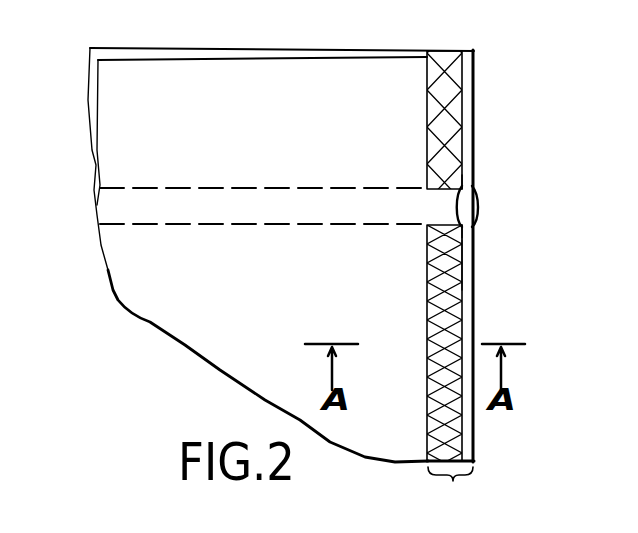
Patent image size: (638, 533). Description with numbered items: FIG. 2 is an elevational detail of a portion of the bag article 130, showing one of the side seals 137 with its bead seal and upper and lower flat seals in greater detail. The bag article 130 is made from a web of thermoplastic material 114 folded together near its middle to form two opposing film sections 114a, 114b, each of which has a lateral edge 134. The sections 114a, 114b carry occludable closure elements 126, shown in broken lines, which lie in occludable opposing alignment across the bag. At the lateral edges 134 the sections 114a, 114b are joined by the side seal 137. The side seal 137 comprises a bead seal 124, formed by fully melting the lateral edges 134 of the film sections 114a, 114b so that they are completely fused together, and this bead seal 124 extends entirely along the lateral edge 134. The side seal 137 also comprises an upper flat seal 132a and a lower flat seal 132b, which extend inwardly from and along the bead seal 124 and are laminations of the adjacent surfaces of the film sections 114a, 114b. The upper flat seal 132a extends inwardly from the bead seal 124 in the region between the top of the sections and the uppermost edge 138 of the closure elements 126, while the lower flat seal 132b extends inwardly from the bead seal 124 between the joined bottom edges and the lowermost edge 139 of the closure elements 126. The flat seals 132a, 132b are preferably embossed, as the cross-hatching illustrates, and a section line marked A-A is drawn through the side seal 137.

The web of thermoplastic material 114 is at (132, 73).
The opposing section 114a is at (258, 57).
The opposing section 114b is at (163, 48).
The bead seal 124 is at (468, 210).
The occludable closure elements 126 is at (137, 207).
The bag article 130 is at (200, 340).
The upper flat seal 132a is at (463, 127).
The lower flat seal 132b is at (448, 440).
The lateral edge 134 is at (473, 265).
The side seal 137 is at (453, 491).
The uppermost edge of the closure elements 138 is at (440, 188).
The lowermost edge of the closure elements 139 is at (443, 228).